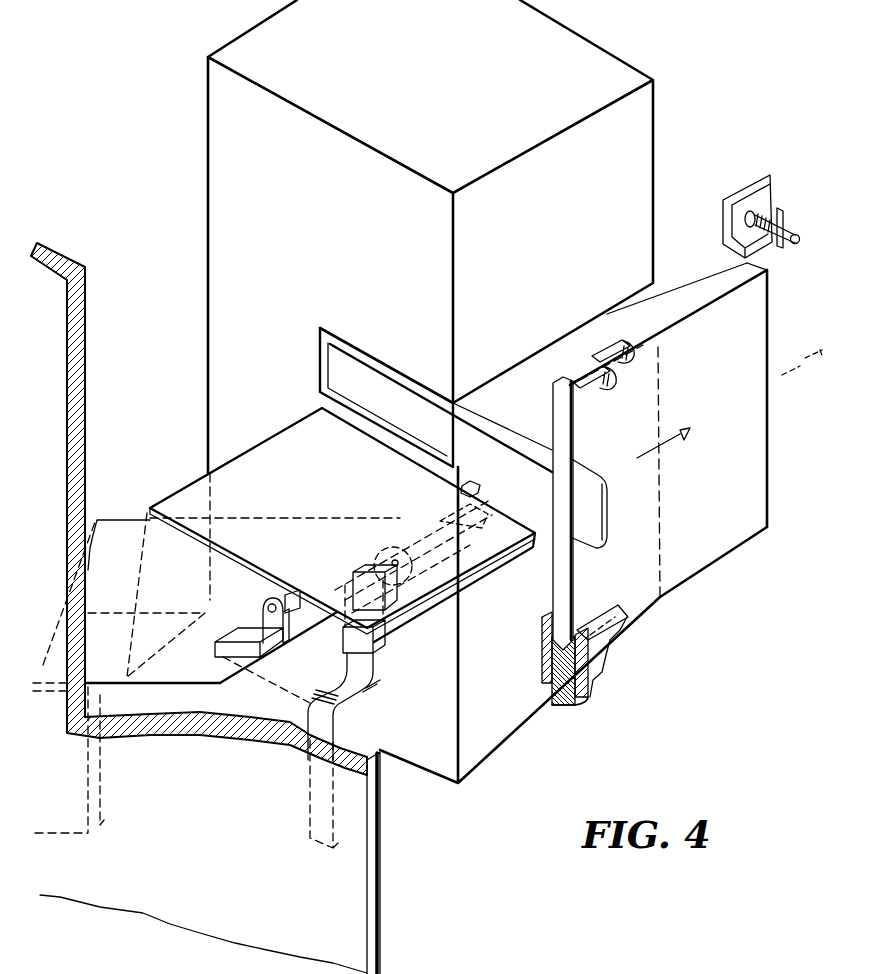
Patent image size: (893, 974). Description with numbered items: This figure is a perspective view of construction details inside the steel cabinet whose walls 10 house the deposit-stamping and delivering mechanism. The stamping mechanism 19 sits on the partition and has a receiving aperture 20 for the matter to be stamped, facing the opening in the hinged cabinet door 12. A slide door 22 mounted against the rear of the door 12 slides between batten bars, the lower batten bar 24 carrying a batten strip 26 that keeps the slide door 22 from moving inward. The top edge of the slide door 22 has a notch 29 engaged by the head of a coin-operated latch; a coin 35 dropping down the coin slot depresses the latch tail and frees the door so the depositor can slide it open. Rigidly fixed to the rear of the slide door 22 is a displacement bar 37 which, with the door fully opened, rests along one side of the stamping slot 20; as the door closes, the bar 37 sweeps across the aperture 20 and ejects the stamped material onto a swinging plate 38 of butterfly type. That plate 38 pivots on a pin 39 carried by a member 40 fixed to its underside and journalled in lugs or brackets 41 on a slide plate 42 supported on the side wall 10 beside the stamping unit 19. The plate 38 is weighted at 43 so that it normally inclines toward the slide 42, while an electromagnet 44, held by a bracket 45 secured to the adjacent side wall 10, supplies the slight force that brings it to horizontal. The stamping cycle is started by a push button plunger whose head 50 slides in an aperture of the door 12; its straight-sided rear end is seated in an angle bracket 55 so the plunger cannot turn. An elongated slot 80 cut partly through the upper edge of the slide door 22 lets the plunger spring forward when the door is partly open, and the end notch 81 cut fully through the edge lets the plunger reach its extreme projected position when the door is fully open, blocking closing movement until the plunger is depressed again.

The cabinet wall 10 is at (72, 368).
The door 12 is at (593, 672).
The stamping mechanism 19 is at (340, 215).
The receiving aperture 20 is at (326, 338).
The slide door 22 is at (715, 527).
The lower batten bar 24 is at (558, 705).
The batten strip 26 is at (543, 653).
The notch 29 is at (573, 375).
The coin 35 is at (802, 368).
The displacement bar 37 is at (455, 418).
The swinging plate 38 is at (247, 500).
The pin 39 is at (268, 605).
The member 40 is at (300, 612).
The lugs or brackets 41 is at (257, 645).
The slide plate 42 is at (153, 543).
The weight 43 is at (483, 573).
The electromagnet 44 is at (403, 617).
The bracket 45 is at (367, 690).
The plunger head 50 is at (798, 248).
The angle bracket 55 is at (757, 182).
The elongated slot 80 is at (633, 335).
The end notch 81 is at (614, 348).